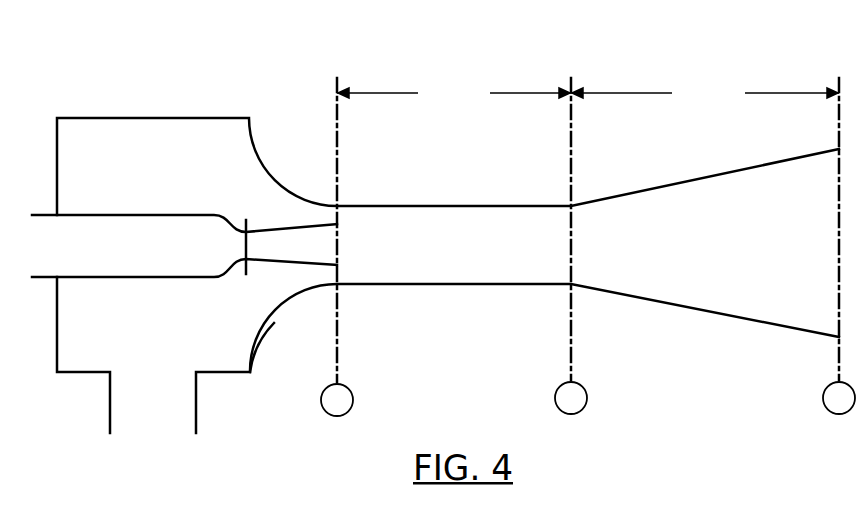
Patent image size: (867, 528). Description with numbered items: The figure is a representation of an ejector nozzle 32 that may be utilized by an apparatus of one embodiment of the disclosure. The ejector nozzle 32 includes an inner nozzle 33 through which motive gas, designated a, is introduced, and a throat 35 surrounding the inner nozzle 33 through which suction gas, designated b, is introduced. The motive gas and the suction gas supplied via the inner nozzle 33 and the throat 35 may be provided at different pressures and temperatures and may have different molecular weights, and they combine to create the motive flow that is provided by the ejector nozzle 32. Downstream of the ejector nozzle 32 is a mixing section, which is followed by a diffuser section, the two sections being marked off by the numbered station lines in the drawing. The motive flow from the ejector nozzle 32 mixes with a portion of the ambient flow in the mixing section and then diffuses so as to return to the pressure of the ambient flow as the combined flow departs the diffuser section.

The ejector nozzle 32 is at (205, 64).
The inner nozzle 33 is at (138, 214).
The throat 35 is at (259, 342).